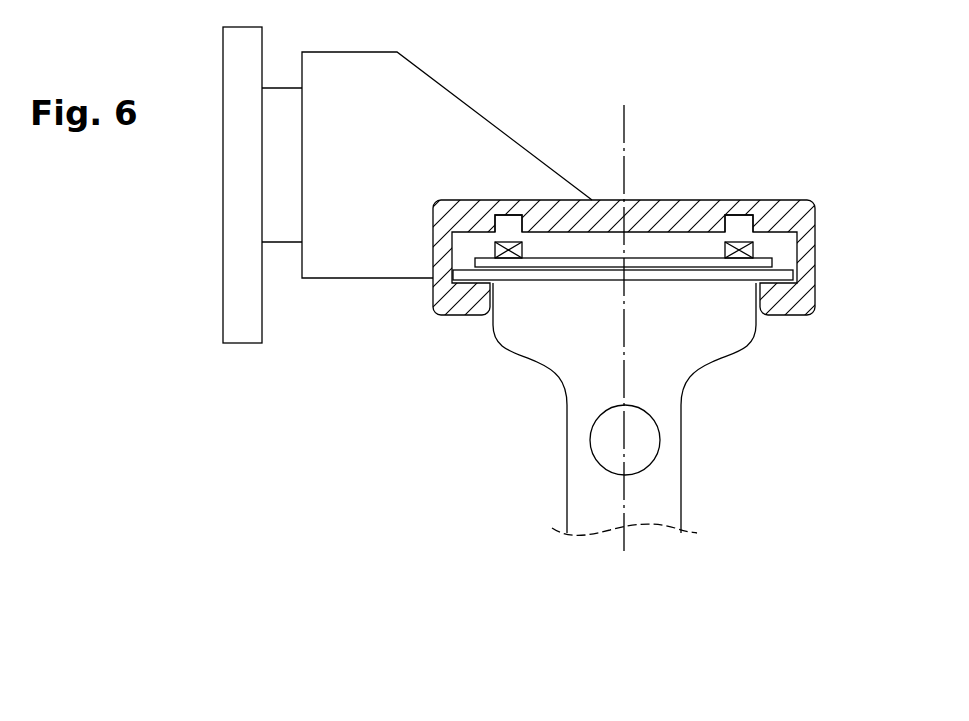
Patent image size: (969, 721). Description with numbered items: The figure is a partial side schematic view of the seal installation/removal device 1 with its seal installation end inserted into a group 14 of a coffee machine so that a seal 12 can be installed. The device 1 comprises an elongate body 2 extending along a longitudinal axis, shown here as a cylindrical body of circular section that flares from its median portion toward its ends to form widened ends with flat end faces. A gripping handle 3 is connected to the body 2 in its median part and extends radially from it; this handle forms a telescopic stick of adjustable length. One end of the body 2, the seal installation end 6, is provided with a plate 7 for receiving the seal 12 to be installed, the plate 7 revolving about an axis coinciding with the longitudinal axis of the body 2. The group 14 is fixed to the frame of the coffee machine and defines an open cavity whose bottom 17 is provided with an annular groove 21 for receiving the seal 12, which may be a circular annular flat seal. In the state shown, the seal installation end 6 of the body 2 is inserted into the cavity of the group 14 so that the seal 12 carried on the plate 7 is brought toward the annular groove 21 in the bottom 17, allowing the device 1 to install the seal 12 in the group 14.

The seal installation/removal device 1 is at (552, 464).
The elongate body 2 is at (658, 492).
The gripping handle 3 is at (637, 430).
The seal installation end 6 is at (797, 270).
The plate 7 is at (764, 263).
The seal 12 is at (507, 240).
The group 14 is at (368, 237).
The bottom 17 is at (664, 228).
The annular groove 21 is at (744, 217).